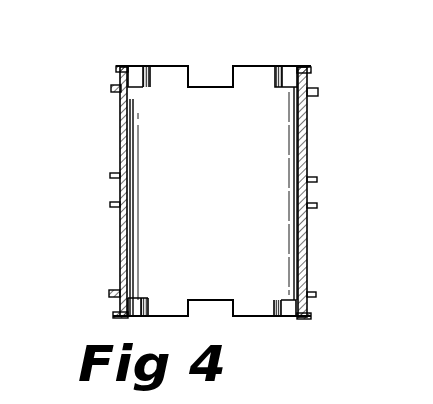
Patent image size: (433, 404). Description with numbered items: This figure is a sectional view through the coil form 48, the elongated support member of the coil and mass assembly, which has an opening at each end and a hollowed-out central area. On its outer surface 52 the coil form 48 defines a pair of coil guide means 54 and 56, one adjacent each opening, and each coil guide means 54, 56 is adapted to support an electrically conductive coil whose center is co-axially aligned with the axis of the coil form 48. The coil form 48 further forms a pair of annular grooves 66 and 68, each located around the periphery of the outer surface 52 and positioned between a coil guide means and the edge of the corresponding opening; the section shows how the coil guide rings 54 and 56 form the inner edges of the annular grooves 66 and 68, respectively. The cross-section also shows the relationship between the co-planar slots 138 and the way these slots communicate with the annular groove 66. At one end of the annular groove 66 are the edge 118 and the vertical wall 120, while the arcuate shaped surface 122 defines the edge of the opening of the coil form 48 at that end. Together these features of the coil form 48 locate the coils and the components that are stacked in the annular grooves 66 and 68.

The co-planar slots 138 is at (203, 82).
The arcuate shaped surface 122 is at (117, 70).
The annular groove 66 is at (118, 77).
The coil guide means 54 is at (120, 138).
The outer surface 52 is at (118, 203).
The coil guide means 56 is at (120, 247).
The annular groove 68 is at (113, 303).
The vertical wall 120 is at (308, 87).
The edge 118 is at (318, 93).
The coil form 48 is at (307, 157).